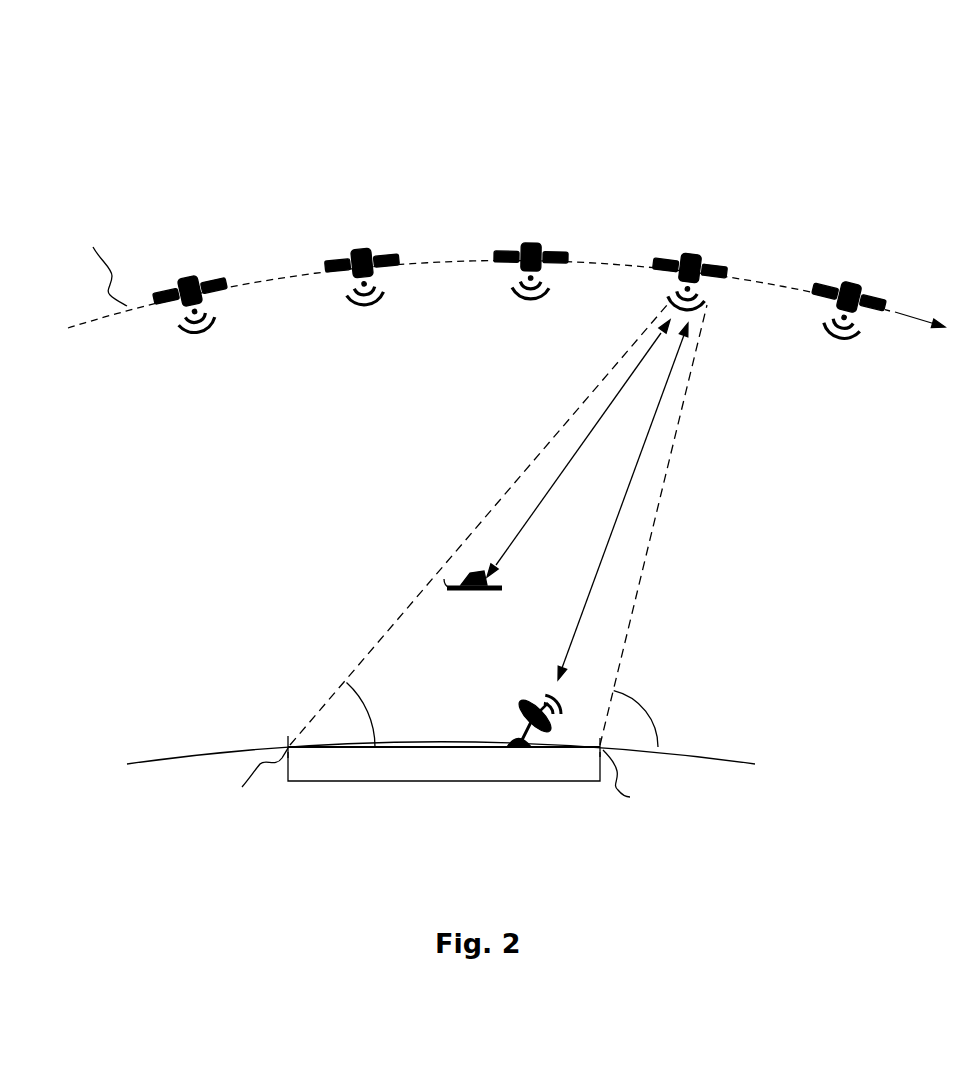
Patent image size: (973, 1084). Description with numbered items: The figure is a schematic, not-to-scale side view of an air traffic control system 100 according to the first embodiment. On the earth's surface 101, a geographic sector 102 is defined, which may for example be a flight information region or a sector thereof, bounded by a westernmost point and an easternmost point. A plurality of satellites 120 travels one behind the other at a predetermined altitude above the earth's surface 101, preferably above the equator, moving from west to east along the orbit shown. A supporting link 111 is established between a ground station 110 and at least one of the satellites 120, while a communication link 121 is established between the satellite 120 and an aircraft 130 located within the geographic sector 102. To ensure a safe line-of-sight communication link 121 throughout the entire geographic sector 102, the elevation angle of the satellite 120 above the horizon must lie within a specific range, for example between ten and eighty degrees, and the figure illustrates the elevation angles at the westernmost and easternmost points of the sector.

The air traffic control system 100 is at (801, 142).
The satellites 120 is at (813, 290).
The communication link 121 is at (545, 492).
The supporting link 111 is at (637, 473).
The aircraft 130 is at (463, 571).
The ground station 110 is at (517, 716).
The earth's surface 101 is at (205, 750).
The geographic sector 102 is at (444, 781).